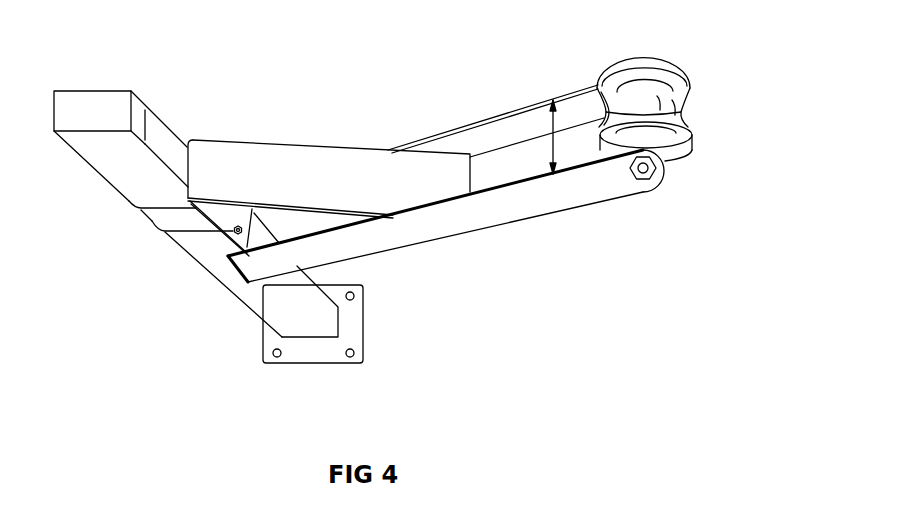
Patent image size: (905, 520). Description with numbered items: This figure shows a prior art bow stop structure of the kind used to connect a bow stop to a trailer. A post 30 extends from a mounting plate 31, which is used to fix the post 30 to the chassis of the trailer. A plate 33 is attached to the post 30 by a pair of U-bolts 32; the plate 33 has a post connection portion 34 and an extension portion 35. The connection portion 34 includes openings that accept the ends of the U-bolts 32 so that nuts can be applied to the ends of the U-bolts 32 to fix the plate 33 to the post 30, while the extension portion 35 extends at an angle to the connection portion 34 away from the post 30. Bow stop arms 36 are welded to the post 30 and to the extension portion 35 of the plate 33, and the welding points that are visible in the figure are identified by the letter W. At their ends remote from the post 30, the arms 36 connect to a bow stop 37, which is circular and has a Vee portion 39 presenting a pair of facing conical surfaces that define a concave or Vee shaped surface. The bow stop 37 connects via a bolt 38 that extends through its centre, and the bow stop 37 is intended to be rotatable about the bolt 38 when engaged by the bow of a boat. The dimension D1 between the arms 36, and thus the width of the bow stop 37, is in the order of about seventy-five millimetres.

The post 30 is at (119, 165).
The mounting plate 31 is at (320, 350).
The U-bolts 32 is at (130, 208).
The plate 33 is at (227, 155).
The post connection portion 34 is at (225, 212).
The extension portion 35 is at (308, 152).
The bow stop arms 36 is at (430, 225).
The bow stop 37 is at (640, 67).
The bolt 38 is at (644, 178).
The Vee portion 39 is at (684, 117).
The welding points W is at (443, 143).
The dimension between the arms D1 is at (550, 130).